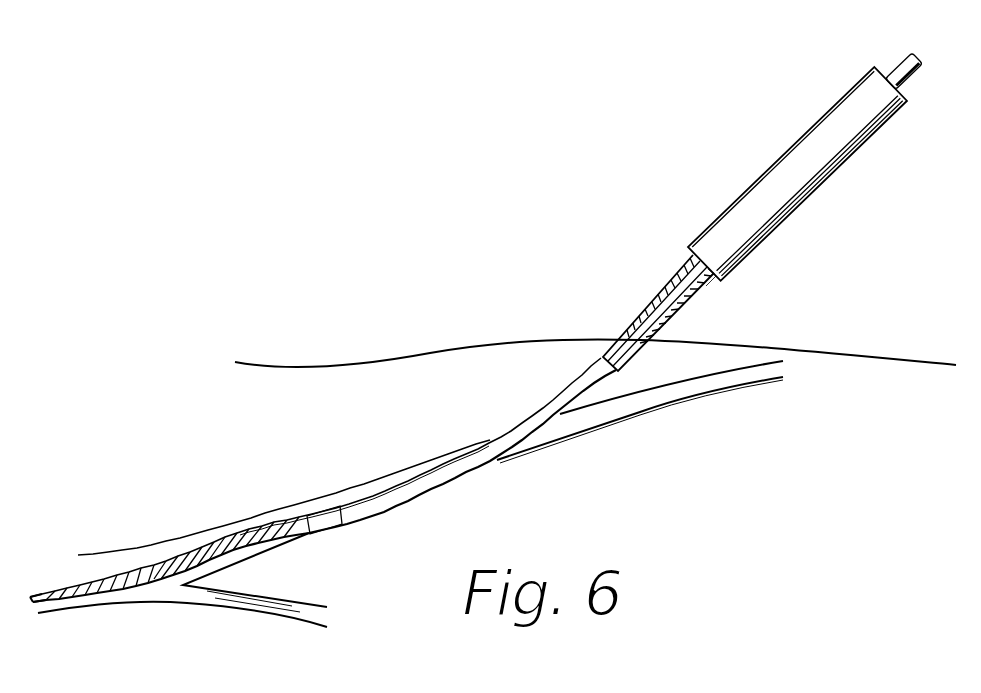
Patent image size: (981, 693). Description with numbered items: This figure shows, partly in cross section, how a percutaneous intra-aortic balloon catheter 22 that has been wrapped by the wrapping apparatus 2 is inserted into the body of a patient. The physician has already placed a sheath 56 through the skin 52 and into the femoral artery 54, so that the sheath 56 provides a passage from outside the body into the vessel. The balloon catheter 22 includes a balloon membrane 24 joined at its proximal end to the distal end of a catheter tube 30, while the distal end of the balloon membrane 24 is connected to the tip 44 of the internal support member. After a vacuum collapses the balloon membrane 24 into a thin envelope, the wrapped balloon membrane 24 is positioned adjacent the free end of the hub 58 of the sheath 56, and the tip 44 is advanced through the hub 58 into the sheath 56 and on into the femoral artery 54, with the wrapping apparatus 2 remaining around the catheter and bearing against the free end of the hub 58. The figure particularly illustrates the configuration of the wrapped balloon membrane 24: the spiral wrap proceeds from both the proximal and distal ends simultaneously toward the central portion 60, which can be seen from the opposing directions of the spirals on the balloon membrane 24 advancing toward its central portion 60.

The wrapping apparatus 2 is at (797, 122).
The intra-aortic balloon catheter 22 is at (882, 56).
The balloon membrane 24 is at (197, 552).
The catheter tube 30 is at (906, 90).
The tip 44 is at (33, 594).
The skin 52 is at (373, 365).
The femoral artery 54 is at (680, 394).
The sheath 56 is at (378, 507).
The hub 58 is at (708, 270).
The central portion 60 is at (161, 560).